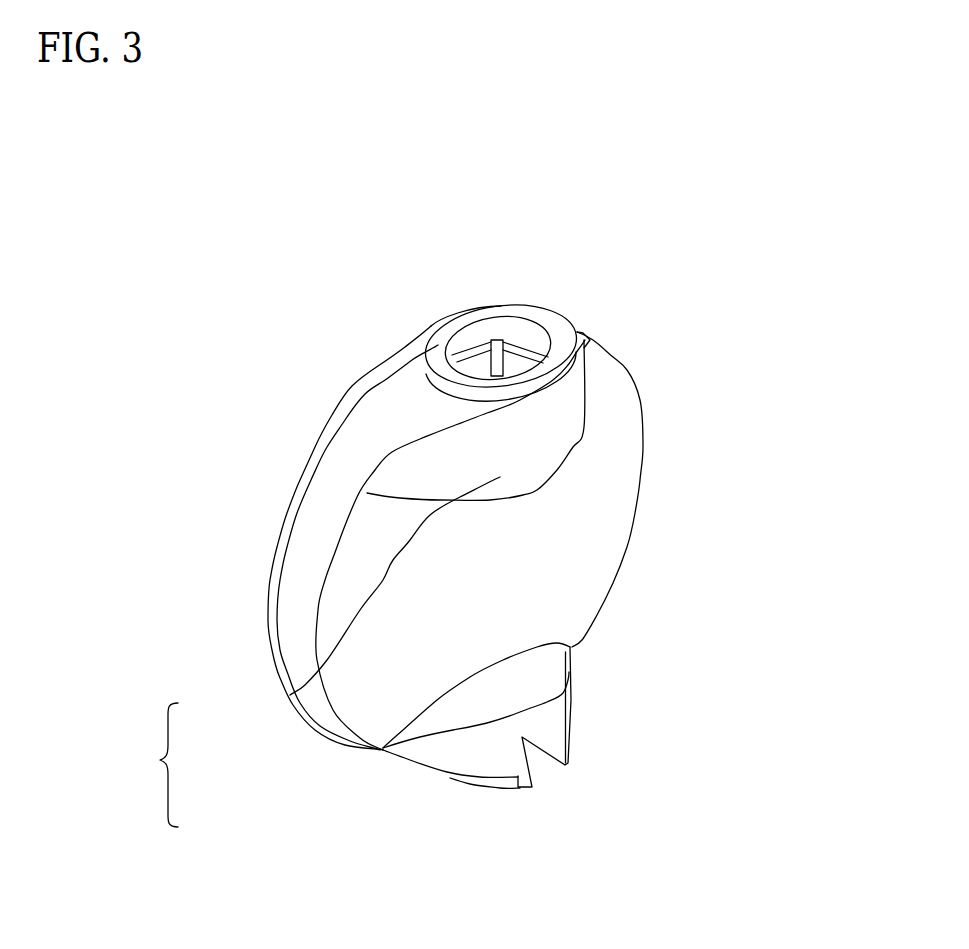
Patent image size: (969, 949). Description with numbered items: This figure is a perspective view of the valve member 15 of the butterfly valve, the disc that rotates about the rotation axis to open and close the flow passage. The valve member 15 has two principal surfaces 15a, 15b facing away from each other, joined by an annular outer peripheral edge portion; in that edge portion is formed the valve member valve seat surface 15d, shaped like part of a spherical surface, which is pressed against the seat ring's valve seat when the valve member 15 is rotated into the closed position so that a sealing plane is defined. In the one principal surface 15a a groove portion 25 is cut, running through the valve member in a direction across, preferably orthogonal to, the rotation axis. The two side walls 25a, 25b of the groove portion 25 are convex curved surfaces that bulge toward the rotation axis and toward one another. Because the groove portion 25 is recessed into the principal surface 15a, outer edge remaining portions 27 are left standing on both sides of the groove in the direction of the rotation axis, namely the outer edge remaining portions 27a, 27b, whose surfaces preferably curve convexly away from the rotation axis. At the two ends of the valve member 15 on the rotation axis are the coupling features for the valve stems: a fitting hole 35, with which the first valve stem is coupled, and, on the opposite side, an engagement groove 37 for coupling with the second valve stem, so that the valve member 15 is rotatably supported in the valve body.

The valve member 15 is at (733, 291).
The principal surface 15a is at (437, 480).
The principal surface 15b is at (335, 411).
The valve member valve seat surface 15d is at (392, 358).
The groove portion 25 is at (587, 573).
The side wall of groove portion 25a is at (537, 490).
The side wall of groove portion 25b is at (543, 683).
The outer edge remaining portions 27 is at (150, 765).
The outer edge remaining portion 27a is at (290, 695).
The outer edge remaining portion 27b is at (500, 743).
The fitting hole 35 is at (507, 330).
The engagement groove 37 is at (553, 743).